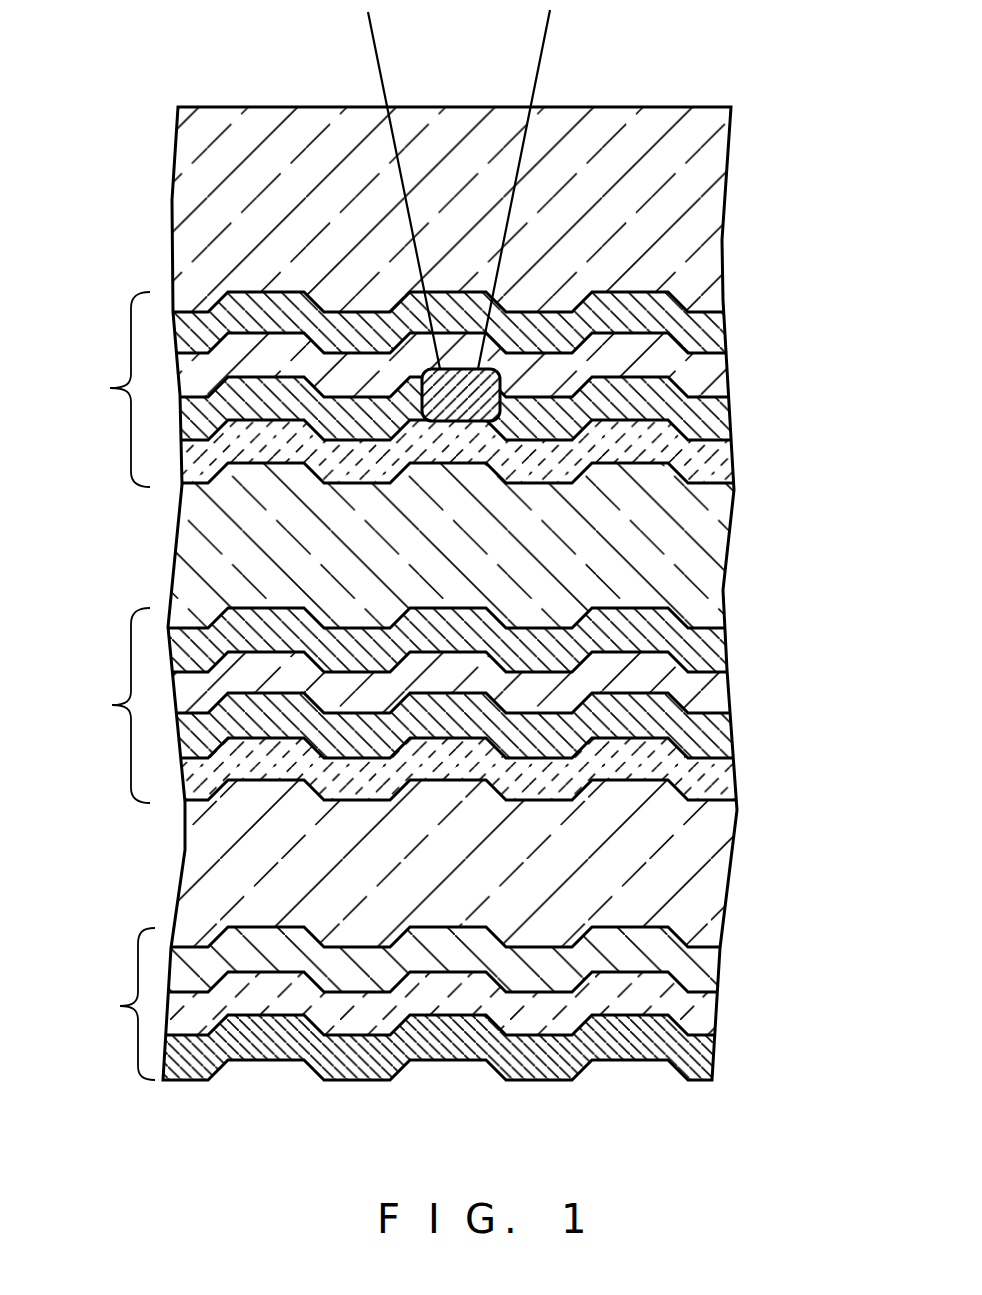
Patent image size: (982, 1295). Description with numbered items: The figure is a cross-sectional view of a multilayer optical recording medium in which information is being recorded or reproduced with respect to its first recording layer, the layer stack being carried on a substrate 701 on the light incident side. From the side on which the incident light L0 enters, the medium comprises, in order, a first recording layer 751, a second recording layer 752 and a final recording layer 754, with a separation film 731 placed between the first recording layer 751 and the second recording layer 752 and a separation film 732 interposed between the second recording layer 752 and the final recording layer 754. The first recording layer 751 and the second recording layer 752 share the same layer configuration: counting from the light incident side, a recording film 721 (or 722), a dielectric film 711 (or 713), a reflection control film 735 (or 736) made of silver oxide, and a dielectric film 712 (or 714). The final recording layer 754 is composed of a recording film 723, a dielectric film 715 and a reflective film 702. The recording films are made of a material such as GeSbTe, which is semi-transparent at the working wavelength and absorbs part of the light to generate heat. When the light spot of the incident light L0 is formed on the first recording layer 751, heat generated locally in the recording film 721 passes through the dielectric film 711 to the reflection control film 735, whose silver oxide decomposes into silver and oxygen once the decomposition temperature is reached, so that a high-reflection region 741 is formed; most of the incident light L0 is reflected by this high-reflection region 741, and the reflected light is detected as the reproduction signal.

The first substrate 701 is at (727, 190).
The reflective film 702 is at (715, 1050).
The dielectric film 711 is at (728, 368).
The dielectric film 712 is at (732, 461).
The dielectric film 713 is at (728, 685).
The dielectric film 714 is at (735, 776).
The dielectric film 715 is at (717, 1003).
The recording film 721 is at (725, 318).
The recording film 722 is at (725, 641).
The recording film 723 is at (720, 958).
The separation film 731 is at (729, 538).
The separation film 732 is at (730, 871).
The reflection control film 735 is at (730, 416).
The reflection control film 736 is at (731, 733).
The high-reflection region 741 is at (423, 369).
The first recording layer 751 is at (102, 389).
The second recording layer 752 is at (102, 705).
The final recording layer 754 is at (107, 1004).
The incident light L0 is at (512, 63).